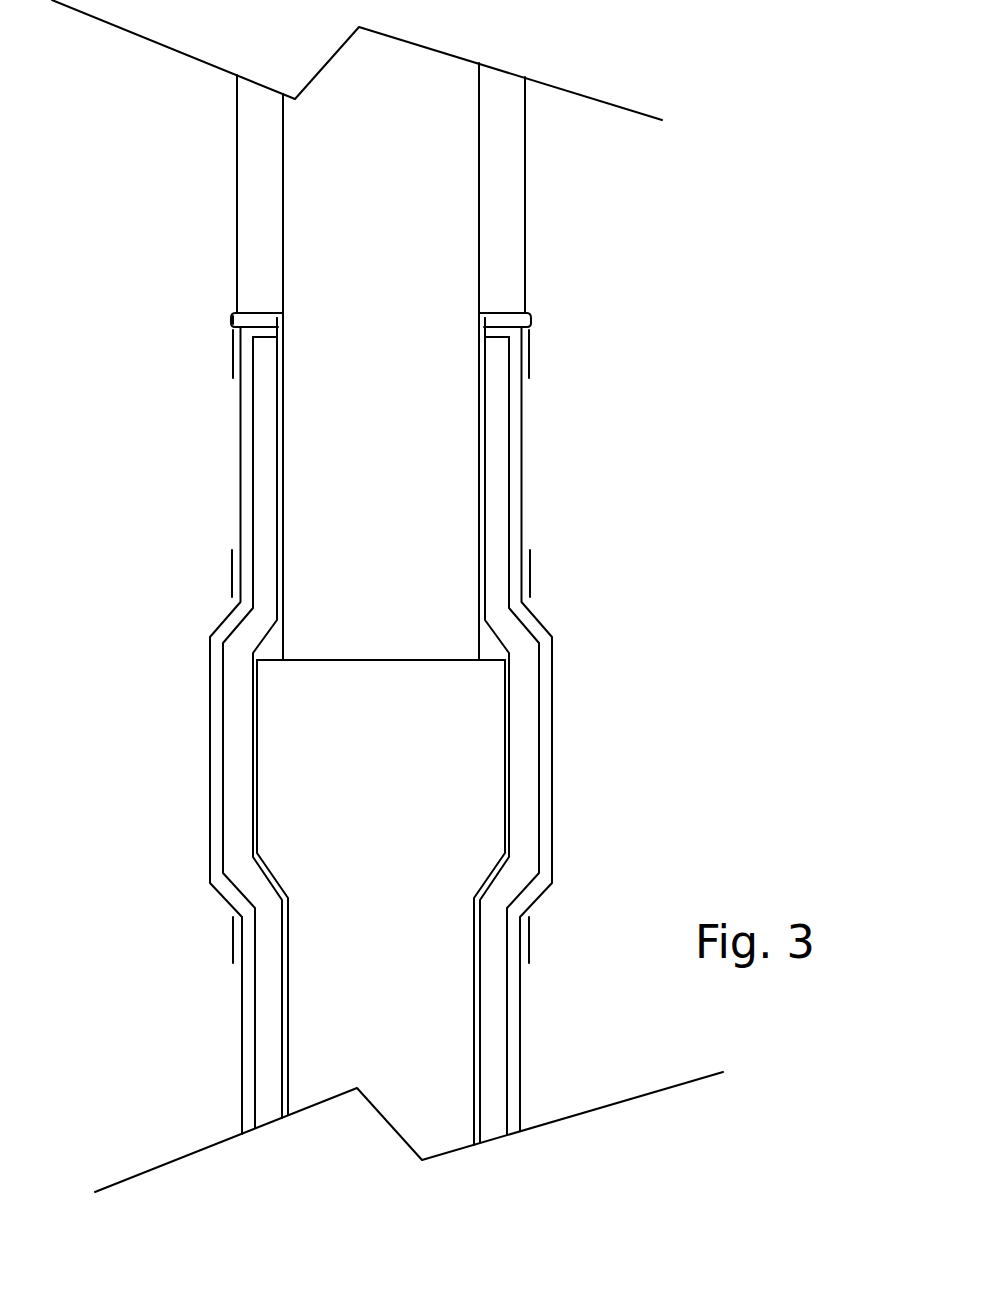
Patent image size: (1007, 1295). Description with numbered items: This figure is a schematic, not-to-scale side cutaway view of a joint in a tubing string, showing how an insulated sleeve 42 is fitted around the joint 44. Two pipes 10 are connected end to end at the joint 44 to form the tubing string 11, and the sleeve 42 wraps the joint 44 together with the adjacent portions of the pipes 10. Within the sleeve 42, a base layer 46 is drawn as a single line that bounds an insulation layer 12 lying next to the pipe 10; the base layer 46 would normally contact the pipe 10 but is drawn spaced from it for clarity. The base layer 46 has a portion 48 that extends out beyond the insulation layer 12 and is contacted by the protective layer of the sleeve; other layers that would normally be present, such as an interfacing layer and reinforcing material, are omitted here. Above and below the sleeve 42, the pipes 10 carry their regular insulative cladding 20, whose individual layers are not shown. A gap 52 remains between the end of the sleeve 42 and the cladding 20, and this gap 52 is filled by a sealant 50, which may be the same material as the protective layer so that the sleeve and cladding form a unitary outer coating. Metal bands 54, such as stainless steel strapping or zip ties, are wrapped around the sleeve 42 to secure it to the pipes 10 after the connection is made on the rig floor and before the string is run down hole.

The pipe 10 is at (387, 596).
The tubing string 11 is at (128, 713).
The insulation layer 12 is at (268, 528).
The regular insulative cladding 20 is at (237, 182).
The sleeve 42 is at (560, 758).
The joint 44 is at (381, 902).
The base layer 46 is at (278, 441).
The portion of the base layer 48 is at (279, 322).
The sealant 50 is at (230, 321).
The gap 52 is at (257, 311).
The metal bands 54 is at (232, 362).